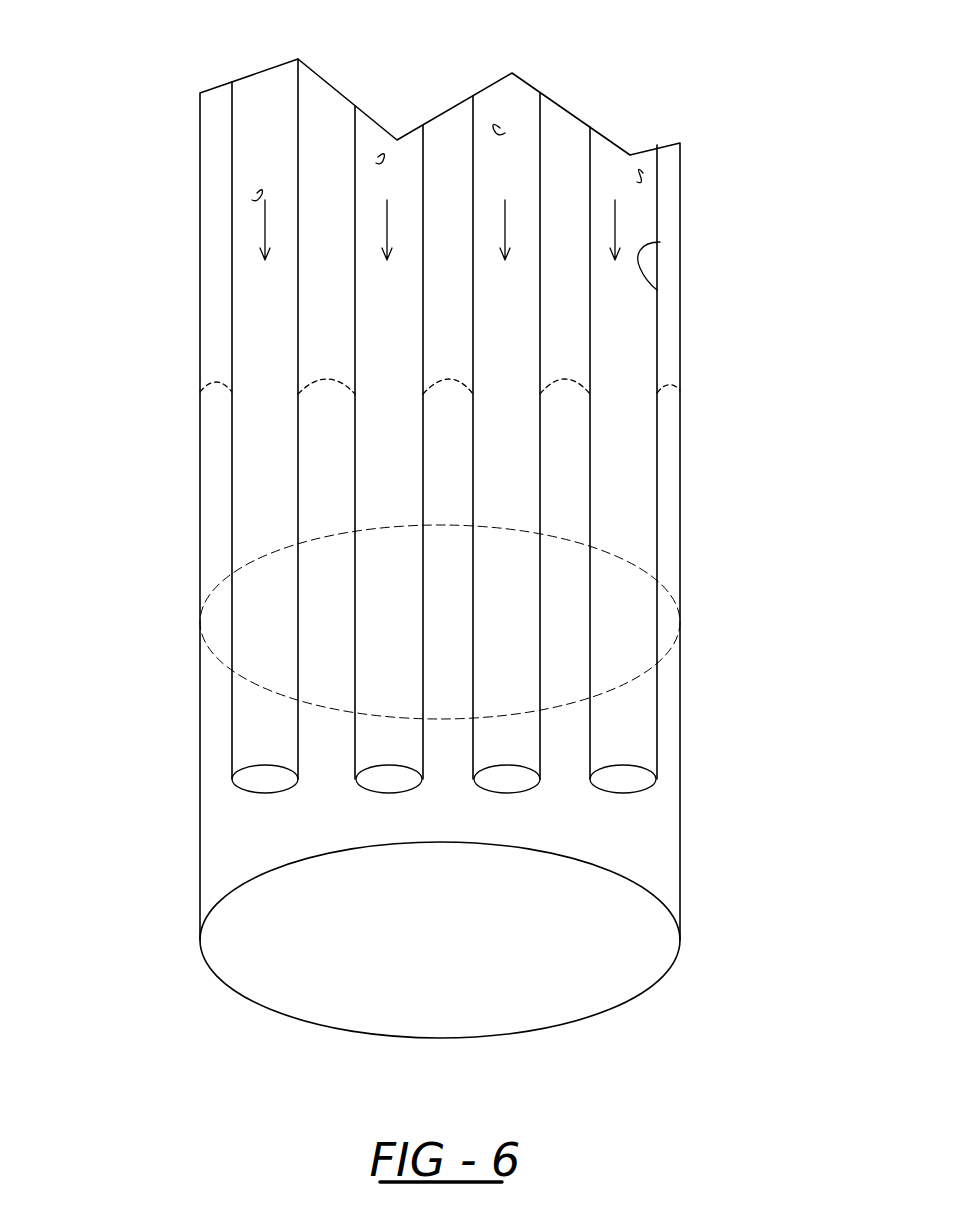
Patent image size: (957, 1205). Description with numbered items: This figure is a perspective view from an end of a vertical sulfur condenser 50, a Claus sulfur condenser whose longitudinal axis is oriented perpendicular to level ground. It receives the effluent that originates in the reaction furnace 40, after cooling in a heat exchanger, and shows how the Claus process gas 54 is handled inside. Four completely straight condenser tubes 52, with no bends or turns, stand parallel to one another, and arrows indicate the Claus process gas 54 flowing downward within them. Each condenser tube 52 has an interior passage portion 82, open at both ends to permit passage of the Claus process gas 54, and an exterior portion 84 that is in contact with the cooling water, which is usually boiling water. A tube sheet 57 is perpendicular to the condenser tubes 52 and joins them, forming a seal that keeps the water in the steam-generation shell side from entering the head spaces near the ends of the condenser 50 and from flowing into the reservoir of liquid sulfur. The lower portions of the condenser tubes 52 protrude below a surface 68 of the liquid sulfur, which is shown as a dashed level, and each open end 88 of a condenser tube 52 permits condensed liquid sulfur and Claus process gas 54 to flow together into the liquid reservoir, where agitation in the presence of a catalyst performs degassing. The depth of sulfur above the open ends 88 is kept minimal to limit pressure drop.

The reaction furnace 40 is at (415, 957).
The vertical sulfur condenser 50 is at (680, 292).
The condenser tubes 52 is at (378, 157).
The Claus process gas 54 is at (503, 215).
The tube sheet 57 is at (223, 380).
The surface of liquid sulfur 68 is at (222, 574).
The Claus process gas interior passage portion 82 is at (660, 242).
The exterior portion 84 is at (630, 510).
The open end 88 is at (257, 779).